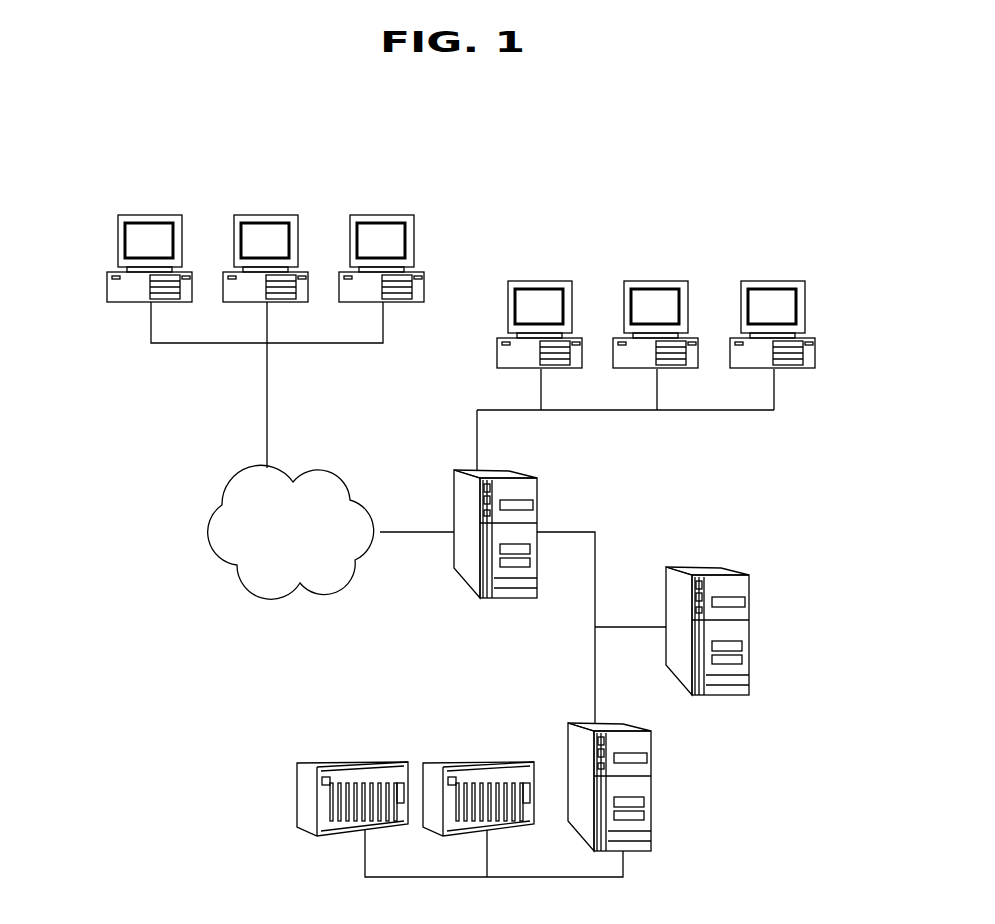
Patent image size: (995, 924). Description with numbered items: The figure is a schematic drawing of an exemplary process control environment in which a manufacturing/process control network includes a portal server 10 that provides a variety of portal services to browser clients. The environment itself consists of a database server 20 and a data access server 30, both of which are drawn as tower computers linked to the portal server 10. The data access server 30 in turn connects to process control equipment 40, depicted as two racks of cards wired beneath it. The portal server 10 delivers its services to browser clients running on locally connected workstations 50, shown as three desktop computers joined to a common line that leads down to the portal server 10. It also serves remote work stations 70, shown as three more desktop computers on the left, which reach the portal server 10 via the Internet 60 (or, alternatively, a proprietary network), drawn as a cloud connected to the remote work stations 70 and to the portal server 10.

The portal server 10 is at (470, 467).
The database server 20 is at (707, 567).
The data access server 30 is at (580, 722).
The process control equipment 40 is at (318, 765).
The locally connected workstations 50 is at (774, 282).
The Internet 60 is at (240, 479).
The remote work stations 70 is at (383, 213).